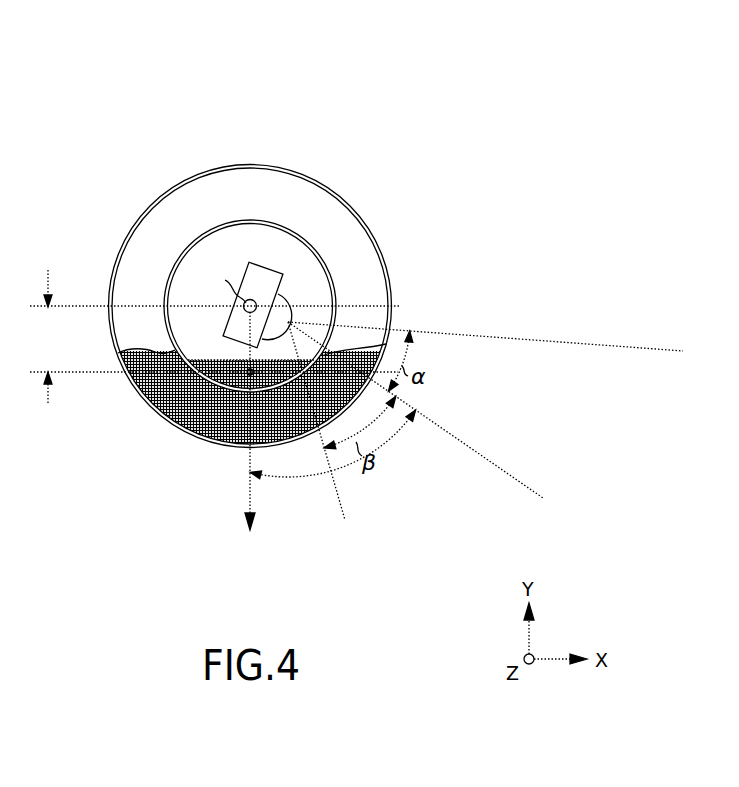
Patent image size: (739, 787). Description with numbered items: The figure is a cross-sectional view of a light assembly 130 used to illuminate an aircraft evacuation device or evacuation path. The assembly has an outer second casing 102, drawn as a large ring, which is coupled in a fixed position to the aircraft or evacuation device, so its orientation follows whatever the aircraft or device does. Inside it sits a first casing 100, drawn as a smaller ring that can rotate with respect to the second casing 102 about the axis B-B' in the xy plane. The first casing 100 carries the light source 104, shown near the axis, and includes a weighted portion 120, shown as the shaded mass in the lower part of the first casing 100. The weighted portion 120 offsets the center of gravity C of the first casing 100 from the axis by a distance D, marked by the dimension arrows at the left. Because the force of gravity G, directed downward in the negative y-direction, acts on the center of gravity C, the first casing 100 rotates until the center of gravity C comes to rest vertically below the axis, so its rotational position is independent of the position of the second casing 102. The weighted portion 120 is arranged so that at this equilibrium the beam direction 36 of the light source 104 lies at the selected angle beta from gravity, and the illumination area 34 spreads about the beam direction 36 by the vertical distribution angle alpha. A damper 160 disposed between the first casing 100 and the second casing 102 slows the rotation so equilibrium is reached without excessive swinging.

The light assembly 130 is at (113, 50).
The second casing 102 is at (153, 205).
The first casing 100 is at (242, 220).
The light source 104 is at (278, 296).
The weighted portion 120 is at (202, 359).
The damper 160 is at (222, 431).
The illumination area 34 is at (538, 341).
The beam direction 36 is at (515, 483).
The center of gravity C is at (248, 374).
The distance D is at (40, 333).
The force of gravity G is at (259, 431).